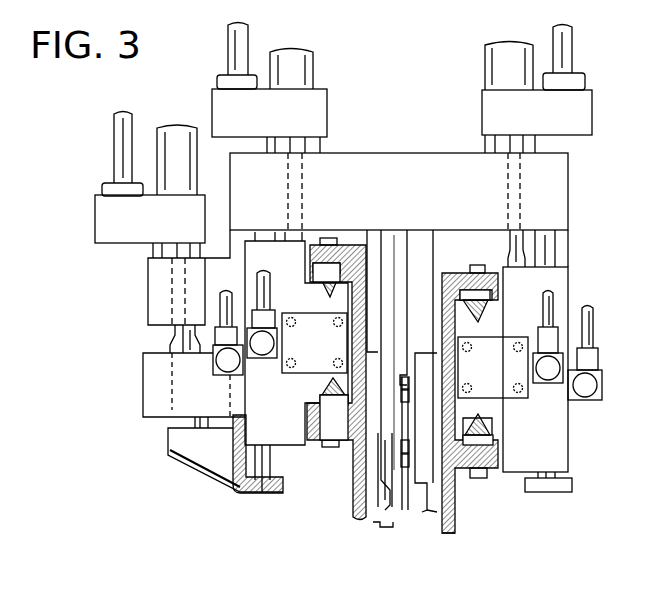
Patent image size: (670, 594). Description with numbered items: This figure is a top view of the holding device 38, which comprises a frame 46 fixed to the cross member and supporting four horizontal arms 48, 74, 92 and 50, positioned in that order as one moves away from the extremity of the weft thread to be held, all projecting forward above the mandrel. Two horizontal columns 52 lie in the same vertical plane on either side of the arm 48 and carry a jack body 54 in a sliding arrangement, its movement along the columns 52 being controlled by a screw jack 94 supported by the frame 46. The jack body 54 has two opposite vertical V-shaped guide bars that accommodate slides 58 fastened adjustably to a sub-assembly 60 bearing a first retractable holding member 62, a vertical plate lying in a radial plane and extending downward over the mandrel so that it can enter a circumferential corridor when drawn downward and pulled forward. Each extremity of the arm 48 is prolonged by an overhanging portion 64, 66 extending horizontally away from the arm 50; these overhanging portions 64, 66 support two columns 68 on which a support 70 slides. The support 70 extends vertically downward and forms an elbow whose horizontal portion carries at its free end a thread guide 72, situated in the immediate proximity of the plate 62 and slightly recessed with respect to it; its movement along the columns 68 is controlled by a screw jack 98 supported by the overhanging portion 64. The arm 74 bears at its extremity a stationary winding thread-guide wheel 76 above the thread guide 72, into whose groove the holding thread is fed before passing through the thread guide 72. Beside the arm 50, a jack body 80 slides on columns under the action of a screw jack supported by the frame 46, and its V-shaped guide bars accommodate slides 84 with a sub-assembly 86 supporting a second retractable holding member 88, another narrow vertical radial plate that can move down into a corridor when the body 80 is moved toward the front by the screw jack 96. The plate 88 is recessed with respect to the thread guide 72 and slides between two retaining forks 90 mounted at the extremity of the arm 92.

The holding device 38 is at (130, 349).
The frame 46 is at (432, 157).
The horizontal arm 48 is at (250, 463).
The horizontal arm 50 is at (568, 242).
The horizontal columns 52 is at (264, 494).
The jack body 54 is at (298, 417).
The slides 58 is at (310, 277).
The sub-assembly 60 is at (373, 250).
The first retractable holding member 62 is at (375, 500).
The overhanging portion 64 is at (155, 272).
The overhanging portion 66 is at (167, 448).
The columns 68 is at (185, 340).
The support 70 is at (155, 408).
The thread guide 72 is at (372, 526).
The horizontal arm 74 is at (393, 270).
The winding thread-guide wheel 76 is at (388, 515).
The jack body 80 is at (545, 447).
The slides 84 is at (487, 316).
The sub-assembly 86 is at (496, 207).
The second retractable holding member 88 is at (446, 538).
The retaining forks 90 is at (437, 518).
The horizontal arm 92 is at (420, 355).
The screw jack 94 is at (288, 128).
The screw jack 96 is at (555, 127).
The screw jack 98 is at (169, 233).